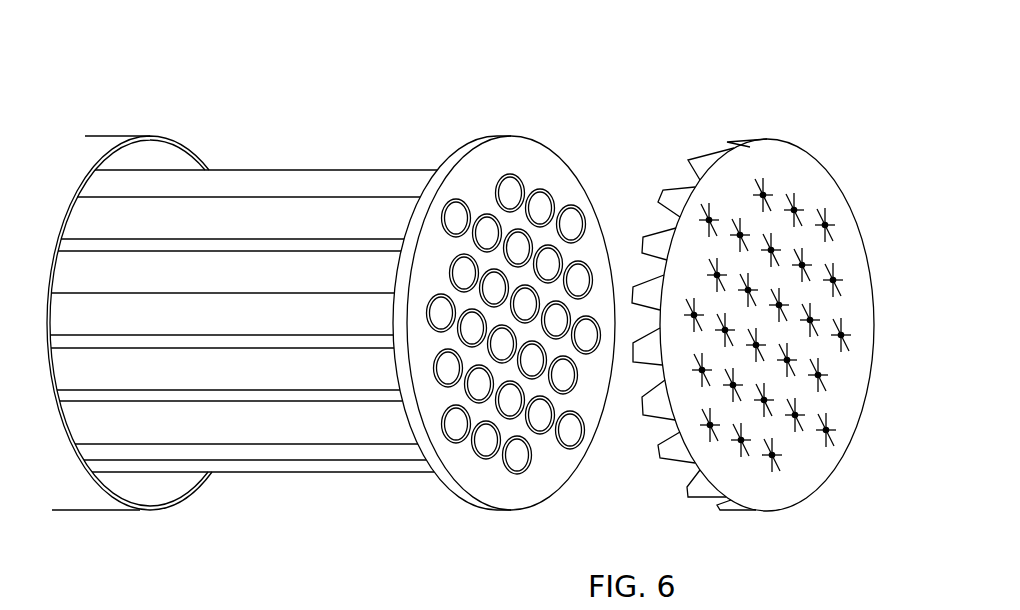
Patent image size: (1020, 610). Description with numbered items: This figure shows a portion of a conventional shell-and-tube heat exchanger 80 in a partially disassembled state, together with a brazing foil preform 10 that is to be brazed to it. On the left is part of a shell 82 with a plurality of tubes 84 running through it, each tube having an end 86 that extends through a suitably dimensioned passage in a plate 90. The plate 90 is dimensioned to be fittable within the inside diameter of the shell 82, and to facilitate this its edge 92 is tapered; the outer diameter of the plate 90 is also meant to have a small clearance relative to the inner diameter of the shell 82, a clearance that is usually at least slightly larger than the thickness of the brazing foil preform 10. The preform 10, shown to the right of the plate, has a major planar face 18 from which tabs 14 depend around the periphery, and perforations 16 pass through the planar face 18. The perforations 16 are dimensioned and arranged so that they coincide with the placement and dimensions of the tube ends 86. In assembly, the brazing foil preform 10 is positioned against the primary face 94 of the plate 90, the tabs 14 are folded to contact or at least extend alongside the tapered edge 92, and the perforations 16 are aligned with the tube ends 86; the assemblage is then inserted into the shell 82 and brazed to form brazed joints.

The shell-and-tube heat exchanger 80 is at (202, 130).
The shell 82 is at (65, 493).
The tubes 84 is at (245, 207).
The end 86 is at (580, 200).
The plate 90 is at (506, 331).
The edge 92 is at (456, 494).
The primary face 94 is at (525, 494).
The brazing foil preform 10 is at (762, 315).
The tabs 14 is at (703, 152).
The perforations 16 is at (833, 208).
The major planar face 18 is at (793, 172).